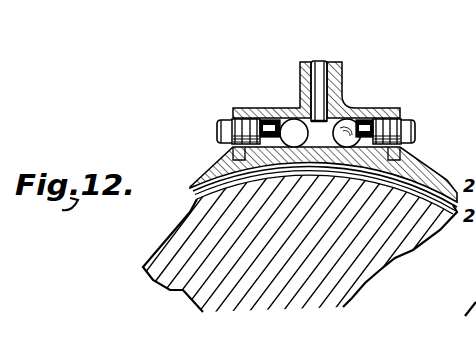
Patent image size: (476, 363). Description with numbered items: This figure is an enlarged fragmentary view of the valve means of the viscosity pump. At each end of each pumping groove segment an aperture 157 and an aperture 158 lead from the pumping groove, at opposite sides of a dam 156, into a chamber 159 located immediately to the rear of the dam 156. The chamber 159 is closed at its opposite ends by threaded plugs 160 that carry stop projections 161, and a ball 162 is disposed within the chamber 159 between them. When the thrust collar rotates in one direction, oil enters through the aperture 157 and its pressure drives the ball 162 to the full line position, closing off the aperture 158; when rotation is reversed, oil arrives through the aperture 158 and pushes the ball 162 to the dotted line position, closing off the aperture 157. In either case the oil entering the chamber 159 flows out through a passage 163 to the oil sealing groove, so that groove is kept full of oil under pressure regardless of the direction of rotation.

The dam 156 is at (316, 167).
The aperture 157 is at (274, 157).
The aperture 158 is at (365, 168).
The chamber 159 is at (341, 90).
The threaded plug 160 is at (231, 119).
The stop projection 161 is at (268, 117).
The ball 162 is at (350, 122).
The passage 163 is at (322, 74).